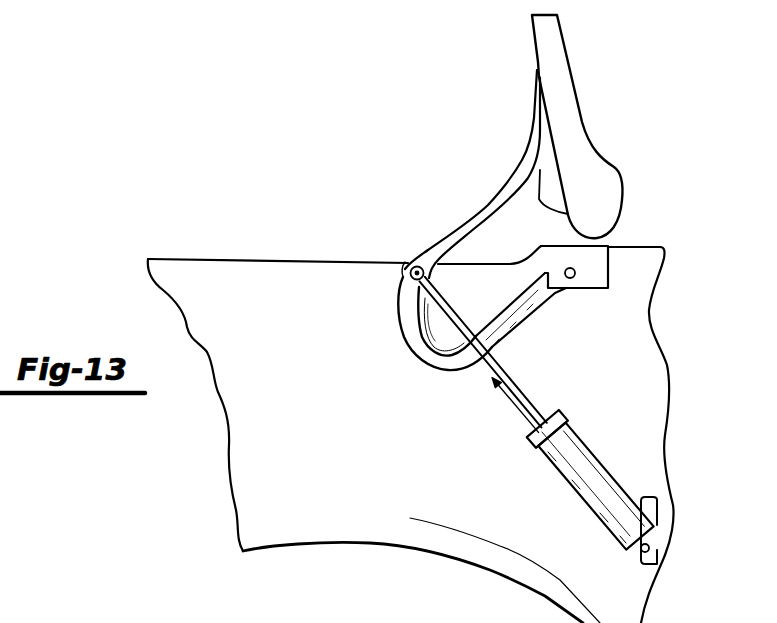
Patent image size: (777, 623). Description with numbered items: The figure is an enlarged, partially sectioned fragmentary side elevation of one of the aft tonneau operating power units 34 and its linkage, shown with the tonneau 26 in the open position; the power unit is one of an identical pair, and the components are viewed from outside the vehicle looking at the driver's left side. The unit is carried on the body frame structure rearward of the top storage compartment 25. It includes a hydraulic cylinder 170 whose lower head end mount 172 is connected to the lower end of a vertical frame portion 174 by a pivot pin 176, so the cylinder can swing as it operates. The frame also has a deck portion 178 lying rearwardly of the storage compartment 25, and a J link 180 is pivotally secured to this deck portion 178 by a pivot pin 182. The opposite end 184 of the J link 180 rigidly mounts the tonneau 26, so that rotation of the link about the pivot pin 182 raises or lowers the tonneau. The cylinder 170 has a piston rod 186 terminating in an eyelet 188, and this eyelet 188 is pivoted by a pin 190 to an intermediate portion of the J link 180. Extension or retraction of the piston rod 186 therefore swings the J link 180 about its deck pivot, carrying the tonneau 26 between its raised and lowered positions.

The top storage compartment 25 is at (241, 391).
The tonneau 26 is at (579, 121).
The aft tonneau operating power unit 34 is at (596, 453).
The hydraulic cylinder 170 is at (603, 470).
The lower head end mount 172 is at (649, 546).
The vertical frame portion 174 is at (650, 517).
The pivot pin 176 is at (643, 613).
The deck portion 178 is at (607, 252).
The J link 180 is at (440, 360).
The pivot pin 182 is at (573, 279).
The opposite end of J link 184 is at (477, 210).
The piston rod 186 is at (524, 396).
The eyelet 188 is at (401, 287).
The pin 190 is at (408, 278).